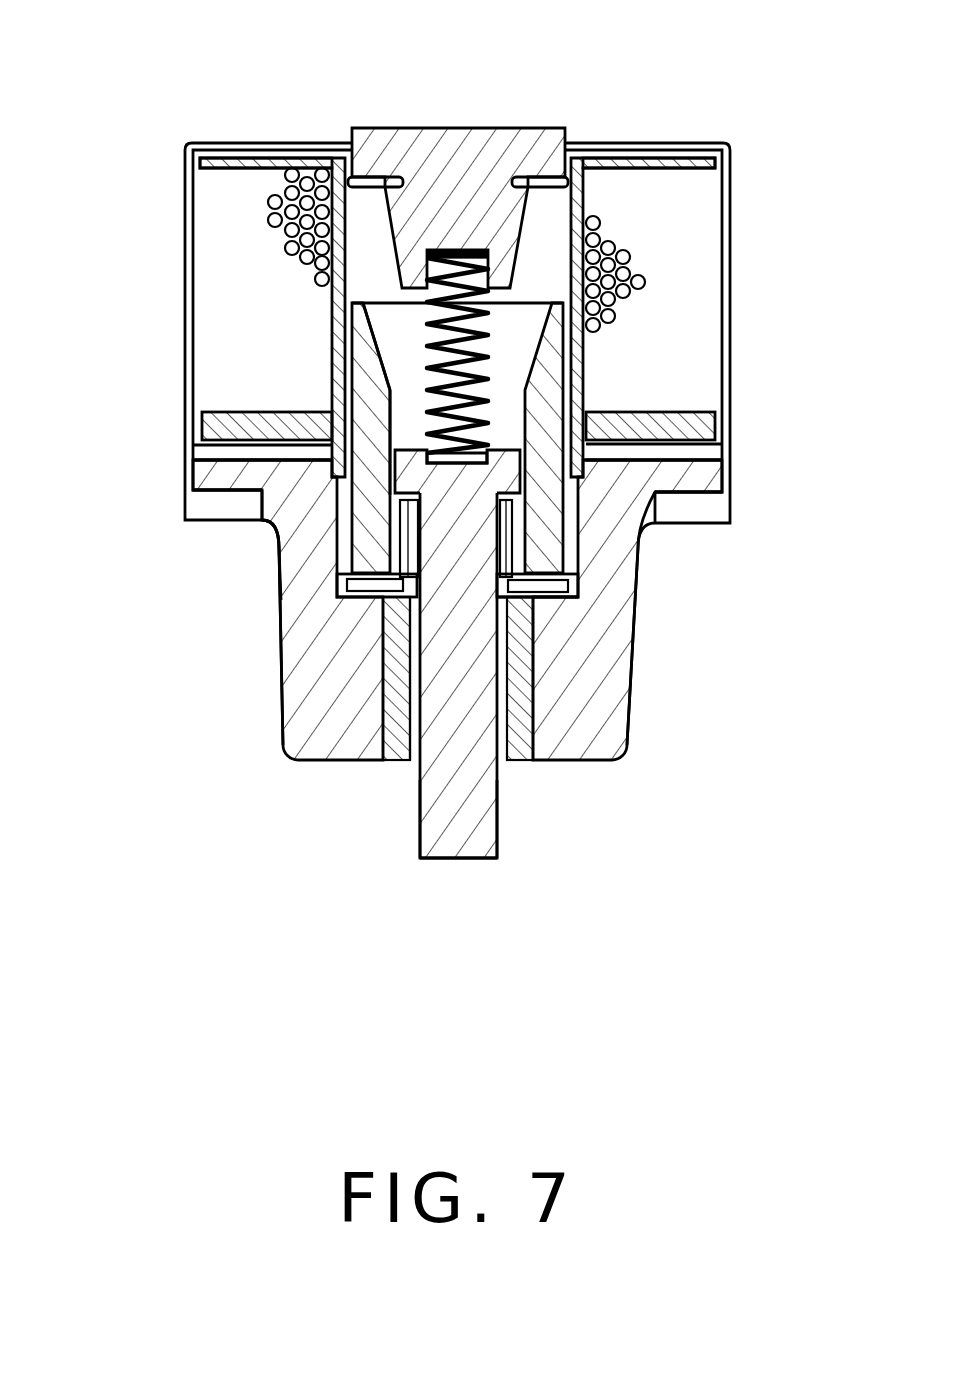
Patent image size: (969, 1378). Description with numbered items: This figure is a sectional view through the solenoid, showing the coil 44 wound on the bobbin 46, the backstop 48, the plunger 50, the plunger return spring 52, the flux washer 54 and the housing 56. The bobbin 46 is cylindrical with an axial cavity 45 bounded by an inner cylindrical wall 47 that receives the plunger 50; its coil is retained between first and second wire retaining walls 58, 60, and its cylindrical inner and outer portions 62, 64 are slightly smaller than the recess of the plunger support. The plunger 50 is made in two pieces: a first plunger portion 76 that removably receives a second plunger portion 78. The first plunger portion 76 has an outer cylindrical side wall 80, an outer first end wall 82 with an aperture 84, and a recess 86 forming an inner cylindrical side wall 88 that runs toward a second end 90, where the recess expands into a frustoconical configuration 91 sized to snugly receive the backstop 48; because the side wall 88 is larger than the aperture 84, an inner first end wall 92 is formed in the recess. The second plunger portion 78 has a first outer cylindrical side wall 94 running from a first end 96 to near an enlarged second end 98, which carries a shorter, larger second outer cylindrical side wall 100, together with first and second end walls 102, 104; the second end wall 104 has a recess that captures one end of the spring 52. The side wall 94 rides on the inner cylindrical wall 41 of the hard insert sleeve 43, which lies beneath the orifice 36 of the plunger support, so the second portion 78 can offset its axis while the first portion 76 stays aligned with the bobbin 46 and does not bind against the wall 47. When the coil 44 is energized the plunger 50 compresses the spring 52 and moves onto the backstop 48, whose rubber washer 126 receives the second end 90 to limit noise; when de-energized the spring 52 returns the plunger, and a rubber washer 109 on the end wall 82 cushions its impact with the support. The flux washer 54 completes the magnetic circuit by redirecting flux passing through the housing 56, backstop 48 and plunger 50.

The orifice 36 is at (400, 712).
The inner cylindrical wall 41 is at (405, 762).
The insert sleeve 43 is at (360, 757).
The coil 44 is at (470, 250).
The axial cavity 45 is at (425, 178).
The bobbin 46 is at (455, 246).
The inner cylindrical wall 47 is at (318, 282).
The backstop 48 is at (458, 152).
The plunger 50 is at (283, 703).
The plunger return spring 52 is at (510, 330).
The flux washer 54 is at (200, 455).
The housing 56 is at (733, 210).
The first wire retaining wall 58 is at (238, 165).
The second wire retaining wall 60 is at (210, 418).
The cylindrical inner portion 62 is at (332, 372).
The cylindrical outer portion 64 is at (262, 505).
The first plunger portion 76 is at (357, 552).
The second plunger portion 78 is at (480, 795).
The outer cylindrical side wall 80 is at (352, 345).
The outer first end wall 82 is at (372, 600).
The aperture 84 is at (543, 690).
The recess 86 is at (388, 300).
The inner cylindrical side wall 88 is at (518, 430).
The second end 90 is at (389, 305).
The frustoconical configuration 91 is at (388, 350).
The inner first end wall 92 is at (340, 592).
The first outer cylindrical side wall 94 is at (465, 830).
The first end 96 is at (470, 860).
The second end 98 is at (280, 535).
The second outer cylindrical side wall 100 is at (565, 412).
The first end wall 102 is at (490, 862).
The second end wall 104 is at (345, 392).
The rubber washer 109 is at (560, 607).
The rubber washer 126 is at (378, 178).